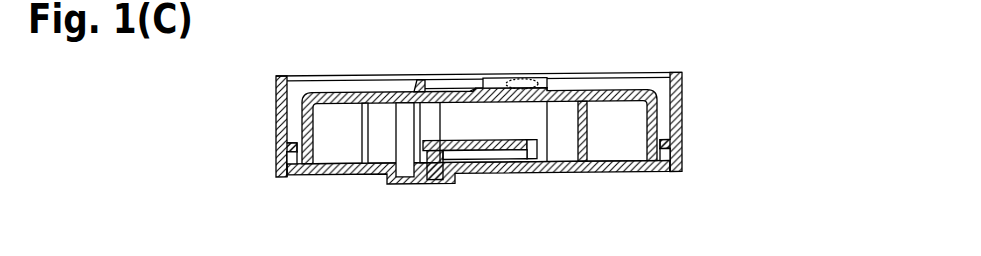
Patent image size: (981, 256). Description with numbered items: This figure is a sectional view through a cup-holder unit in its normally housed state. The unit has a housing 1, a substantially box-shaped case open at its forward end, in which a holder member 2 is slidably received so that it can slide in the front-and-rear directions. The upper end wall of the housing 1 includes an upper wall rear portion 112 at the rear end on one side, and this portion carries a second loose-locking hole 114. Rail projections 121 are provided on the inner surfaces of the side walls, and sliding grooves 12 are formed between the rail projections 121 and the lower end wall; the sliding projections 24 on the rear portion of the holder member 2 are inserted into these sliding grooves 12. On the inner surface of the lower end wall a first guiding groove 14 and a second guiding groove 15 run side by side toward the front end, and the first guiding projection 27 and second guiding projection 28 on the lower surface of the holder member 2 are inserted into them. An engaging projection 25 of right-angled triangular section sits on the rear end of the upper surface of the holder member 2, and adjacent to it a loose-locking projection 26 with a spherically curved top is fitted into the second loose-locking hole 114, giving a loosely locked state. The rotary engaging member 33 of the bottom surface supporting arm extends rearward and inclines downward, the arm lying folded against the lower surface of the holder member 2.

The housing 1 is at (683, 82).
The upper wall rear portion 112 is at (612, 76).
The rail projections 121 is at (293, 143).
The sliding grooves 12 is at (288, 160).
The first guiding projection 27 is at (362, 177).
The sliding projections 24 is at (295, 168).
The holder member 2 is at (640, 103).
The loose-locking projection 26 is at (547, 88).
The engaging projection 25 is at (438, 84).
The second loose-locking hole 114 is at (515, 77).
The first guiding groove 14 is at (403, 183).
The second guiding groove 15 is at (441, 186).
The rotary engaging member 33 is at (501, 155).
The second guiding projection 28 is at (454, 184).